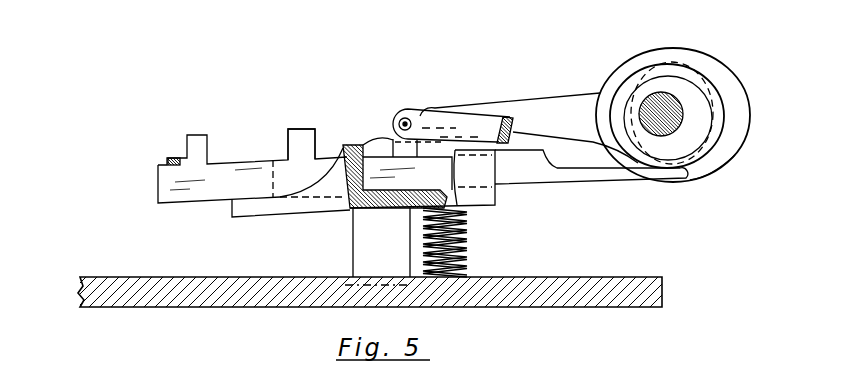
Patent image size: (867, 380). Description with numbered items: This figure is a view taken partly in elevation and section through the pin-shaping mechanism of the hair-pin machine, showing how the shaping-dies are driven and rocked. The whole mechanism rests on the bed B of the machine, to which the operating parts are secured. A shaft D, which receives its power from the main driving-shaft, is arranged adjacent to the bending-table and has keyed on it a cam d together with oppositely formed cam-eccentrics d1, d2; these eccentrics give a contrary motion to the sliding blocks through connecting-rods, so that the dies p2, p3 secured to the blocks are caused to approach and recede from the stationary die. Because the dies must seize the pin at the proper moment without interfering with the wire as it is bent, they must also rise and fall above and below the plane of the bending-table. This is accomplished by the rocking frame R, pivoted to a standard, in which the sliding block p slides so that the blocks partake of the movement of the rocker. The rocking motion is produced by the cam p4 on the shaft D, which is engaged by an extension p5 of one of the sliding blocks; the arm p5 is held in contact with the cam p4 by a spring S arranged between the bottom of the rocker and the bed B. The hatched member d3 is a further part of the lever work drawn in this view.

The bed of the machine B is at (237, 283).
The sliding block p is at (230, 181).
The die p2 is at (190, 158).
The die p3 is at (293, 153).
The cam p4 is at (708, 193).
The extension of sliding block p5 is at (601, 199).
The rocking frame R is at (387, 176).
The spring S is at (468, 251).
The cam-eccentric d2 is at (452, 133).
The arm d3 is at (537, 118).
The cam d is at (673, 115).
The cam-eccentric d1 is at (728, 104).
The shaft D is at (672, 111).